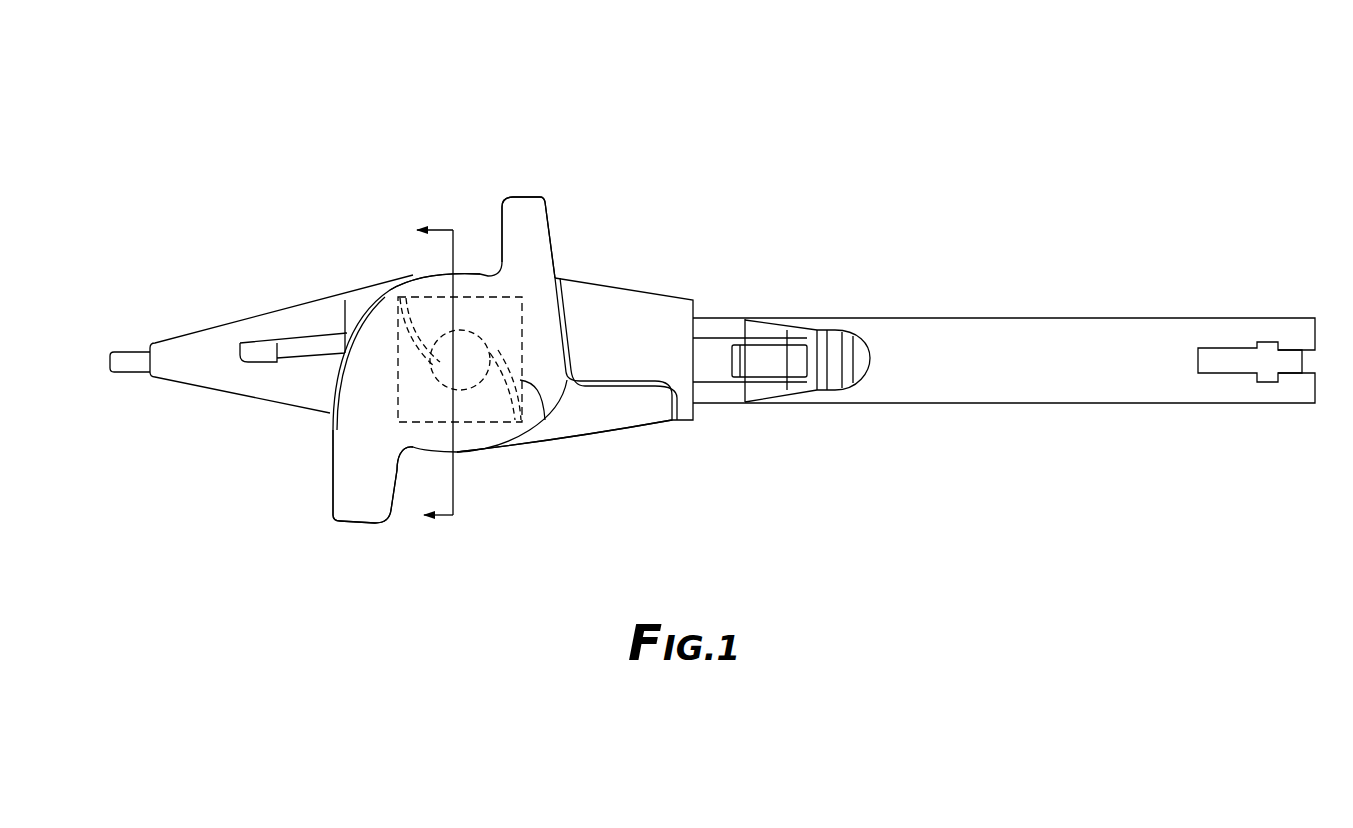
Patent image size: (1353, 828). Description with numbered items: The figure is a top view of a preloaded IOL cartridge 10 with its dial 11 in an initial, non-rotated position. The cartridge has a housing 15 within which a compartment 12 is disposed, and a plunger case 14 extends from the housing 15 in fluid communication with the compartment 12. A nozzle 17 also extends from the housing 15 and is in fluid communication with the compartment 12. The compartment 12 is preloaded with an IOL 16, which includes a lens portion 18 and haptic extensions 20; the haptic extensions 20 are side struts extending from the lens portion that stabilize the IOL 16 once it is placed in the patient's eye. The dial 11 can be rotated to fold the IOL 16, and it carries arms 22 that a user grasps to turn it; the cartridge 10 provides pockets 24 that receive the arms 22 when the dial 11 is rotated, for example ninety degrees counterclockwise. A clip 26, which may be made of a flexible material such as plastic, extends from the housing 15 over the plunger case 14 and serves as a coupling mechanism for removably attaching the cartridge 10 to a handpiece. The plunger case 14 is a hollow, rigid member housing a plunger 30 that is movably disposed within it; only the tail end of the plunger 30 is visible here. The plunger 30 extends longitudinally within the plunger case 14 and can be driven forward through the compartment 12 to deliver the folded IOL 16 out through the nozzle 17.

The IOL cartridge 10 is at (183, 142).
The dial 11 is at (420, 287).
The compartment 12 is at (497, 468).
The plunger case 14 is at (1017, 332).
The housing 15 is at (612, 302).
The IOL 16 is at (393, 405).
The nozzle 17 is at (155, 397).
The lens portion 18 is at (472, 352).
The haptic extensions 20 is at (397, 332).
The arms 22 is at (520, 213).
The pockets 24 is at (265, 335).
The clip 26 is at (820, 340).
The plunger 30 is at (1242, 360).